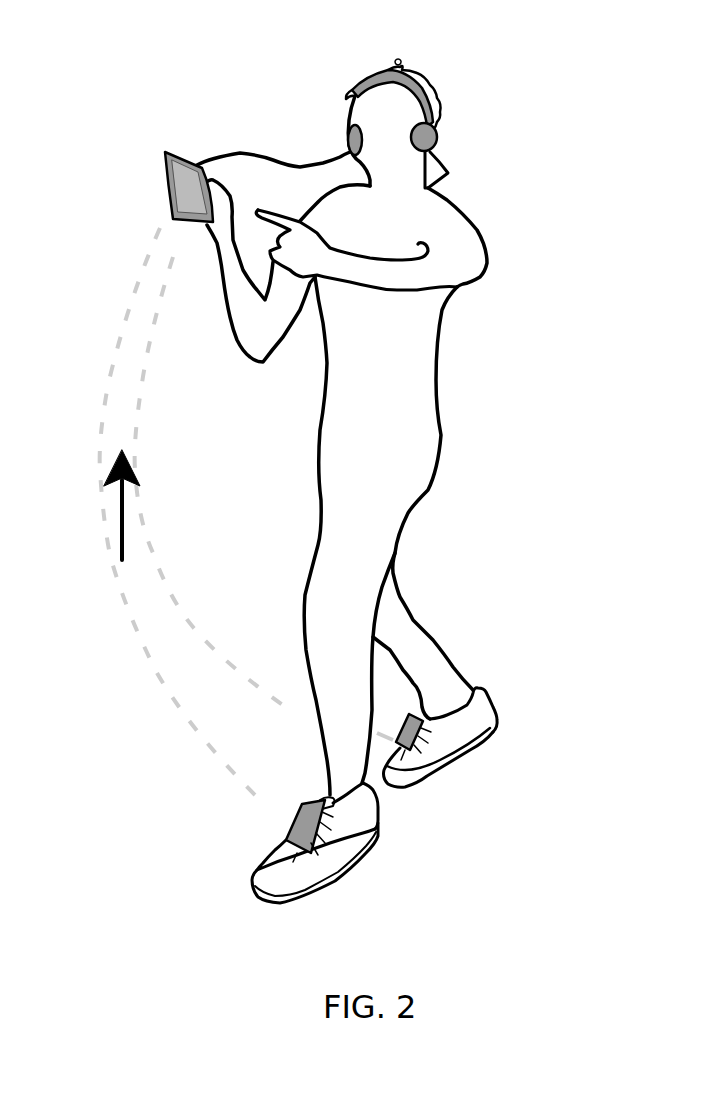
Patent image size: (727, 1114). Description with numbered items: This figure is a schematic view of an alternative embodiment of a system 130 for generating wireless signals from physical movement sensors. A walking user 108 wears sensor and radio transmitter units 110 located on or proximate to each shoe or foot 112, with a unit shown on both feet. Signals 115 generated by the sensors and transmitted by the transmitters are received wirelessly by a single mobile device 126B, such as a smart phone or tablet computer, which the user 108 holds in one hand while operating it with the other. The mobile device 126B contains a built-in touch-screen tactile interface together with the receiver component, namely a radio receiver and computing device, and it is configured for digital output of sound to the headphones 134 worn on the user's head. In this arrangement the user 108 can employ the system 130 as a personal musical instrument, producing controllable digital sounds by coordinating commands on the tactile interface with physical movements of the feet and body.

The system 130 is at (231, 64).
The user 108 is at (433, 395).
The headphones 134 is at (437, 138).
The mobile device 126B is at (177, 173).
The signals 115 is at (177, 593).
The shoe or foot 112 is at (257, 870).
The sensor and radio transmitter unit 110 is at (285, 833).